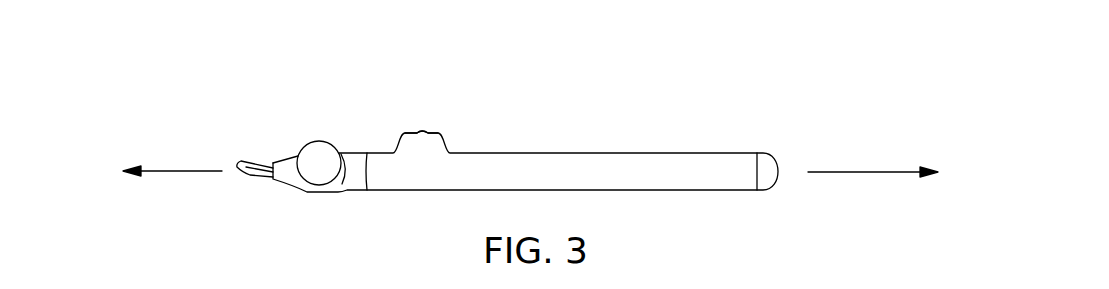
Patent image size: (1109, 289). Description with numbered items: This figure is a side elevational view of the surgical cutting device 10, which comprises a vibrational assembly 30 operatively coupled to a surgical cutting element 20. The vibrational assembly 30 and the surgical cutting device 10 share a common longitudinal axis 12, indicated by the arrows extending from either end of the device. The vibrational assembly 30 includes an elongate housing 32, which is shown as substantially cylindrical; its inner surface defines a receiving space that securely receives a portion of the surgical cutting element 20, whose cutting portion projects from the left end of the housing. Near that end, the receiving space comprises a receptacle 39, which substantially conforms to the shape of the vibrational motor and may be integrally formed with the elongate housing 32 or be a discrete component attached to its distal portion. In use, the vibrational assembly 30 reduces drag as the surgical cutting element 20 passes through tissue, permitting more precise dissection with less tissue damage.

The surgical cutting device 10 is at (722, 42).
The longitudinal axis 12 is at (188, 170).
The surgical cutting element 20 is at (256, 158).
The vibrational assembly 30 is at (423, 126).
The elongate housing 32 is at (593, 158).
The receptacle 39 is at (320, 150).